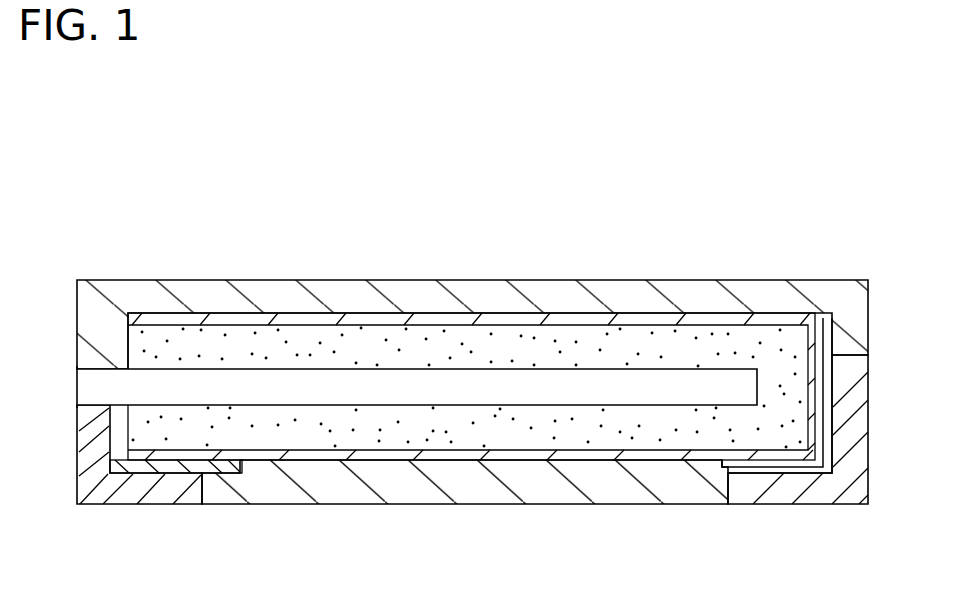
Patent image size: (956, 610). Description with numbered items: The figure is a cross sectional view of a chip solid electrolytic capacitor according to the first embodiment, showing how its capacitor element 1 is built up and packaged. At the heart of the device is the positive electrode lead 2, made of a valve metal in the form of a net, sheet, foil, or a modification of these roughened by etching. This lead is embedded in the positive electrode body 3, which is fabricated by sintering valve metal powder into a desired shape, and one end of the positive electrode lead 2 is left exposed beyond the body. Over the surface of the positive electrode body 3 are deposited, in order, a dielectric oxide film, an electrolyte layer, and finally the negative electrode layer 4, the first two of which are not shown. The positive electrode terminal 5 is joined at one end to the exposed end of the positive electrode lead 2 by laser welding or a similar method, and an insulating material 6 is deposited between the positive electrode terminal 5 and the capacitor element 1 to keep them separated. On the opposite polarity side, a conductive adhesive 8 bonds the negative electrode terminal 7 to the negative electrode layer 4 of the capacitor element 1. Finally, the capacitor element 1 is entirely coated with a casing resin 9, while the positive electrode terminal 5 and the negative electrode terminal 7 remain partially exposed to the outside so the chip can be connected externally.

The capacitor element 1 is at (471, 328).
The positive electrode lead 2 is at (117, 385).
The positive electrode body 3 is at (242, 345).
The negative electrode layer 4 is at (378, 322).
The positive electrode terminal 5 is at (92, 488).
The insulating material 6 is at (162, 468).
The negative electrode terminal 7 is at (857, 413).
The conductive adhesive 8 is at (823, 352).
The casing resin 9 is at (642, 300).